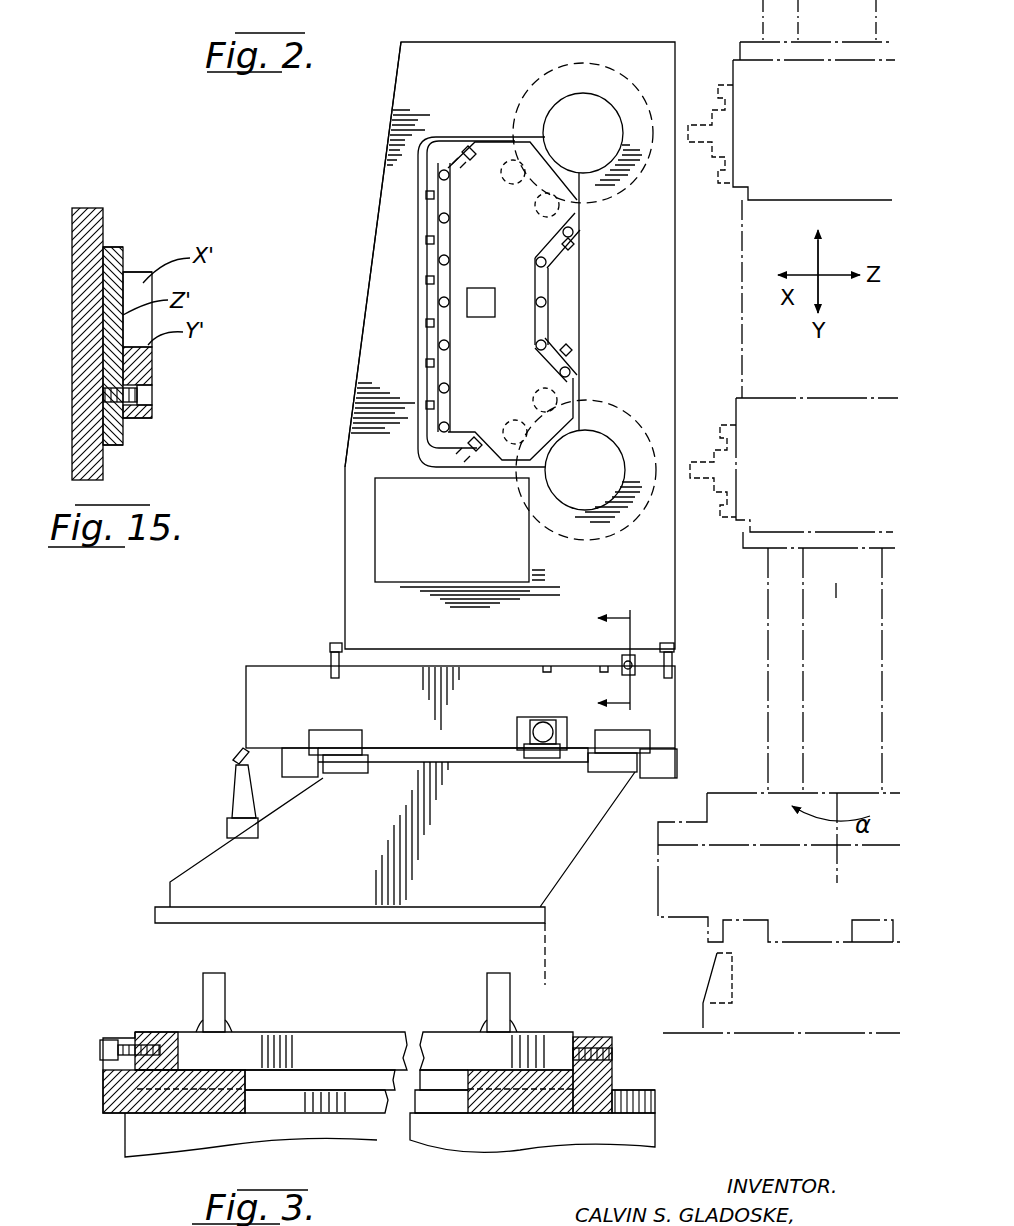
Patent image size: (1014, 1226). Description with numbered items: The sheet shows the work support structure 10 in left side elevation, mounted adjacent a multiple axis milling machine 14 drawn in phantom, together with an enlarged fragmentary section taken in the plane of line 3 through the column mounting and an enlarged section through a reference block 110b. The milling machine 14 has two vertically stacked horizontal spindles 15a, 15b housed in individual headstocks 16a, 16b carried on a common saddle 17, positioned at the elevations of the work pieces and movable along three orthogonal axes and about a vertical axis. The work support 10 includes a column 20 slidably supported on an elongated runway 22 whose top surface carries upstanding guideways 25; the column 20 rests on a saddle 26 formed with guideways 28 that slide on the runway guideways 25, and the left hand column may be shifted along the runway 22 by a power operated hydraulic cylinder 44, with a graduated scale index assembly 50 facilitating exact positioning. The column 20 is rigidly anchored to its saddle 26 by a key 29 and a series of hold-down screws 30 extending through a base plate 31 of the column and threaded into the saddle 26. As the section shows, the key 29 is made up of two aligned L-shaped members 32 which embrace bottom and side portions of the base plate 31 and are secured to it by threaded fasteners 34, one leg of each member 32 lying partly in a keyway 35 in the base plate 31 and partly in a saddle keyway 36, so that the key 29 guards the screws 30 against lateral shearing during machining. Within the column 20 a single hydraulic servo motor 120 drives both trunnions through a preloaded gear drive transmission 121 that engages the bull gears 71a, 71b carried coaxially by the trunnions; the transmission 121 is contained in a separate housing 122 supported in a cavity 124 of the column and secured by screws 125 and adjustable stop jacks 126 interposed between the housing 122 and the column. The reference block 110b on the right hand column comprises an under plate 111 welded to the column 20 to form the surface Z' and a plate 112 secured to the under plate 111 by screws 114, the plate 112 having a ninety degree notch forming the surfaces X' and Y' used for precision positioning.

In FIG. 2, the work support structure 10 is at (378, 130).
In FIG. 2, the multiple axis milling machine 14 is at (733, 52).
In FIG. 2, the upper horizontal spindle 15a is at (725, 120).
In FIG. 2, the lower horizontal spindle 15b is at (728, 462).
In FIG. 2, the upper headstock 16a is at (772, 202).
In FIG. 2, the lower headstock 16b is at (765, 400).
In FIG. 2, the common saddle 17 is at (760, 549).
In FIG. 2, the column 20 is at (362, 350).
In FIG. 3, the column 20 is at (512, 1008).
In FIG. 15, the column 20 is at (74, 240).
In FIG. 2, the elongated runway 22 is at (555, 862).
In FIG. 2, the runway guideway 25 is at (347, 735).
In FIG. 2, the saddle 26 is at (246, 688).
In FIG. 3, the saddle 26 is at (645, 1142).
In FIG. 2, the saddle guideway 28 is at (318, 740).
In FIG. 2, the key 29 is at (622, 662).
In FIG. 3, the key 29 is at (612, 1075).
In FIG. 2, the hold-down screw 30 is at (335, 644).
In FIG. 2, the base plate 31 is at (330, 658).
In FIG. 3, the base plate 31 is at (385, 1032).
In FIG. 3, the L-shaped key member 32 is at (145, 1113).
In FIG. 3, the threaded fastener 34 is at (120, 1040).
In FIG. 3, the base plate keyway 35 is at (290, 1075).
In FIG. 3, the saddle keyway 36 is at (295, 1112).
In FIG. 2, the hydraulic cylinder 44 is at (530, 715).
In FIG. 2, the graduated scale index assembly 50 is at (240, 792).
In FIG. 2, the upper bull gear 71a is at (530, 95).
In FIG. 2, the lower bull gear 71b is at (590, 528).
In FIG. 2, the section line 3— 3 is at (630, 661).
In FIG. 15, the reference block 110b is at (152, 432).
In FIG. 15, the under plate 111 is at (123, 250).
In FIG. 15, the plate 112 is at (152, 365).
In FIG. 15, the screw 114 is at (152, 398).
In FIG. 2, the hydraulic servo motor 120 is at (490, 318).
In FIG. 2, the preloaded gear drive transmission 121 is at (581, 213).
In FIG. 2, the transmission housing 122 is at (550, 282).
In FIG. 2, the cavity 124 is at (435, 248).
In FIG. 2, the screw 125 is at (449, 218).
In FIG. 2, the adjustable stop jack 126 is at (425, 240).